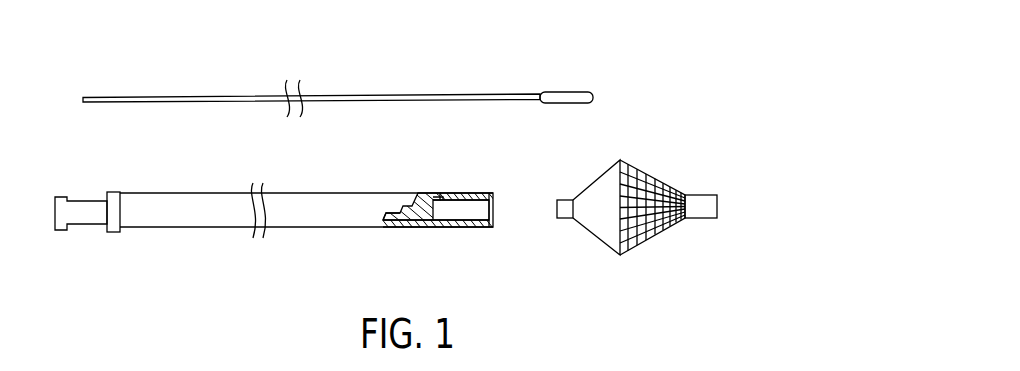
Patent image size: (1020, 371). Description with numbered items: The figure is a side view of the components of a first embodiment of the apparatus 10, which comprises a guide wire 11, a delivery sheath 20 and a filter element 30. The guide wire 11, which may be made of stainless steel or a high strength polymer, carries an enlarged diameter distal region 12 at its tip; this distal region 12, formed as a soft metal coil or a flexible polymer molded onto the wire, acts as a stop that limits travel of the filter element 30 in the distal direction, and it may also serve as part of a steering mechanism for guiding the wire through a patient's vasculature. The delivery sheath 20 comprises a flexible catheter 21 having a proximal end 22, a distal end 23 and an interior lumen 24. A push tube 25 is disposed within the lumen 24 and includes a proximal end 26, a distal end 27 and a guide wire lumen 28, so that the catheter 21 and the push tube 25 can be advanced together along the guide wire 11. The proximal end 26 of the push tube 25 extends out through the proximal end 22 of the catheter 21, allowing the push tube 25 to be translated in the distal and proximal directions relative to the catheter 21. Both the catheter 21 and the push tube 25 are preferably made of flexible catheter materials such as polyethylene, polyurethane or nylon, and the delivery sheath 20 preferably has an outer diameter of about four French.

The apparatus 10 is at (658, 58).
The guide wire 11 is at (205, 95).
The enlarged diameter distal region 12 is at (553, 90).
The delivery sheath 20 is at (211, 165).
The flexible catheter 21 is at (305, 218).
The proximal end 22 is at (135, 232).
The distal end 23 is at (477, 193).
The interior lumen 24 is at (481, 213).
The push tube 25 is at (412, 226).
The proximal end 26 is at (84, 210).
The distal end 27 is at (440, 200).
The guide wire lumen 28 is at (416, 205).
The filter element 30 is at (648, 232).